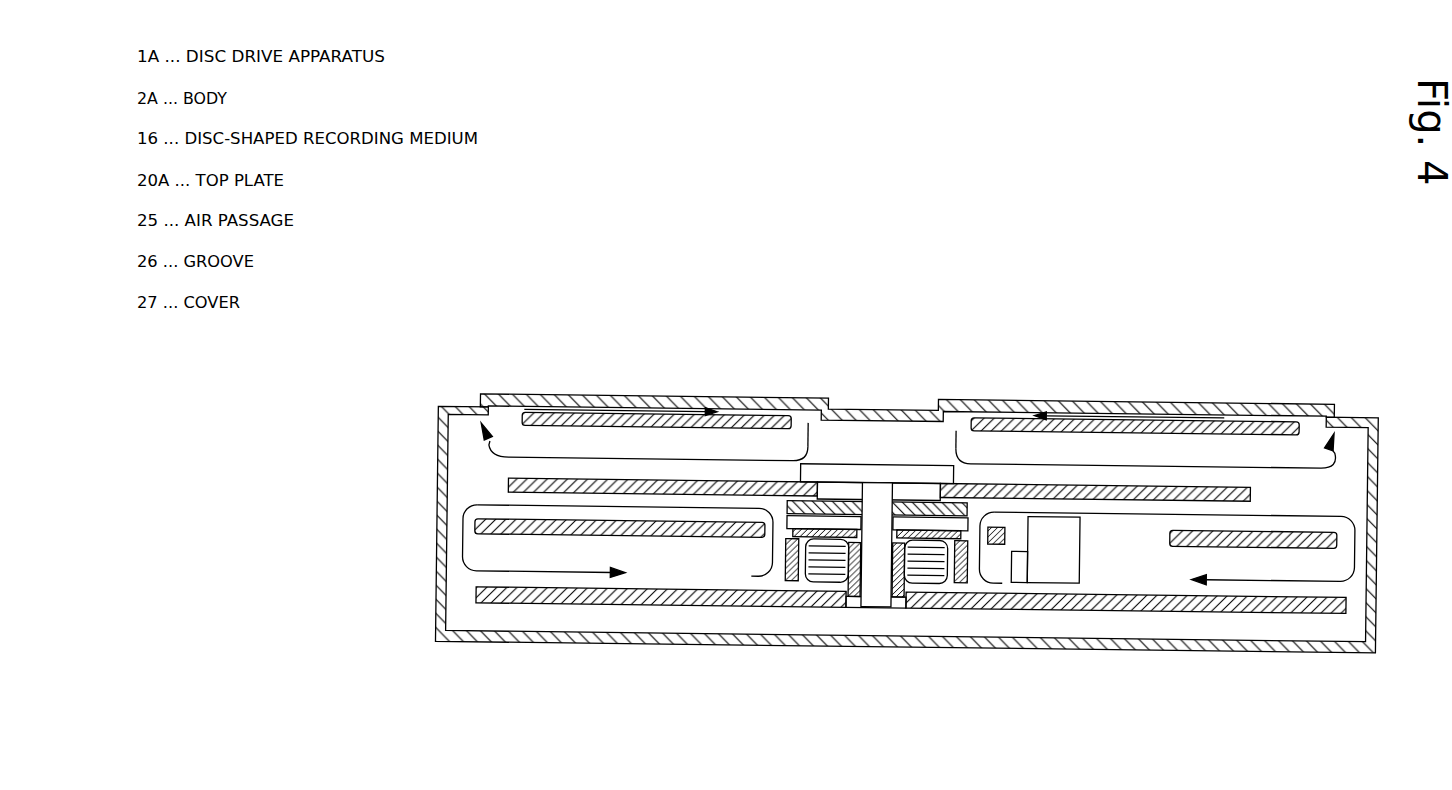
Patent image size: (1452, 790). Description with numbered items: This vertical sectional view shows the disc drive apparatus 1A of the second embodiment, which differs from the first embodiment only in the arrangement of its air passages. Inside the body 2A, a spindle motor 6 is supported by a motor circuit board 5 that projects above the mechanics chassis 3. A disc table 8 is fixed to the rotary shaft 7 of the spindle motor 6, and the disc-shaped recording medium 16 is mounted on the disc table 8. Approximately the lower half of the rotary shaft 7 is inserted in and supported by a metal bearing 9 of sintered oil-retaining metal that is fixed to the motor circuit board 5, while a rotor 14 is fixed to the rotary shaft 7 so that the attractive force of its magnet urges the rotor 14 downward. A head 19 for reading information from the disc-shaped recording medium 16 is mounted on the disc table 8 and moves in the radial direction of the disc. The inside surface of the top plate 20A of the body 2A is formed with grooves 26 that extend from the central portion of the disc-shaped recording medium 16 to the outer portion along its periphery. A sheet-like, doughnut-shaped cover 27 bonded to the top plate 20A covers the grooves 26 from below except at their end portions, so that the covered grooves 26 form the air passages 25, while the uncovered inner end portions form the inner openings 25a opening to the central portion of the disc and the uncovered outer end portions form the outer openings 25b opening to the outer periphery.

The disc drive apparatus 1A is at (917, 300).
The body 2A is at (673, 643).
The mechanics chassis 3 is at (650, 540).
The motor circuit board 5 is at (1316, 612).
The spindle motor 6 is at (792, 585).
The rotary shaft 7 is at (875, 587).
The disc table 8 is at (968, 517).
The metal bearing 9 is at (925, 600).
The rotor 14 is at (982, 588).
The disc-shaped recording medium 16 is at (1073, 484).
The head 19 is at (1073, 532).
The top plate 20A is at (782, 398).
The air passages 25 is at (730, 413).
The inner openings 25a is at (798, 423).
The outer openings 25b is at (507, 415).
The grooves 26 is at (562, 413).
The cover 27 is at (573, 427).